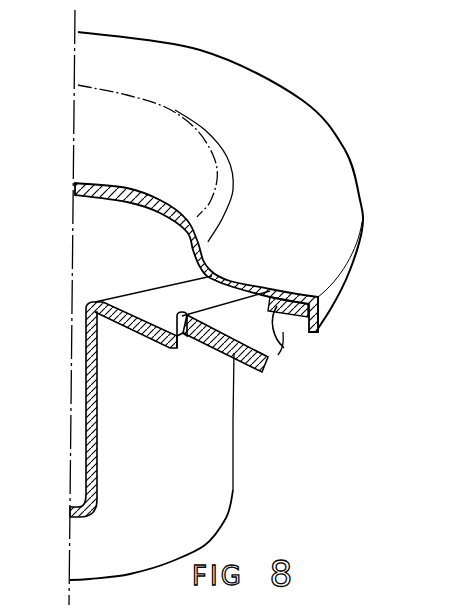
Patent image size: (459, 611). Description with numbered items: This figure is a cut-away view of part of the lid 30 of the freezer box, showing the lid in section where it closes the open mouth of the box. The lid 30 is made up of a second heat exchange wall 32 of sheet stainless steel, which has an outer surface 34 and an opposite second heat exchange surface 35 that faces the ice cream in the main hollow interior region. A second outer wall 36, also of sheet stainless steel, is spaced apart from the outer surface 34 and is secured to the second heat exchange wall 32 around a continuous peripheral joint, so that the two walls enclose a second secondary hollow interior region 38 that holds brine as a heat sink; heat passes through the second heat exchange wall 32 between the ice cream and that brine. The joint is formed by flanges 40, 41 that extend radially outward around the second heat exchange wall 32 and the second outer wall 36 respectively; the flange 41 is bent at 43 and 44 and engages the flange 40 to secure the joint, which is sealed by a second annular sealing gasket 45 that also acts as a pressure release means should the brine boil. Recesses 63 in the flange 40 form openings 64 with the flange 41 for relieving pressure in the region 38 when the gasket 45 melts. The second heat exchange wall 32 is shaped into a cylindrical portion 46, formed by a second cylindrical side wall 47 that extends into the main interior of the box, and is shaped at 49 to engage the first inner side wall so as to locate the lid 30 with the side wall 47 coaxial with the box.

The lid 30 is at (300, 125).
The second heat exchange wall 32 is at (215, 520).
The outer surface 34 is at (178, 305).
The second heat exchange surface 35 is at (230, 457).
The second outer wall 36 is at (267, 107).
The second secondary hollow interior region 38 is at (92, 292).
The flange 40 is at (255, 373).
The flange 41 is at (320, 158).
The bend 43 is at (319, 297).
The bend 44 is at (314, 332).
The second annular sealing gasket 45 is at (282, 292).
The cylindrical portion 46 is at (230, 490).
The second cylindrical side wall 47 is at (230, 418).
The shaped portion 49 is at (192, 355).
The recesses 63 is at (283, 330).
The openings 64 is at (287, 327).